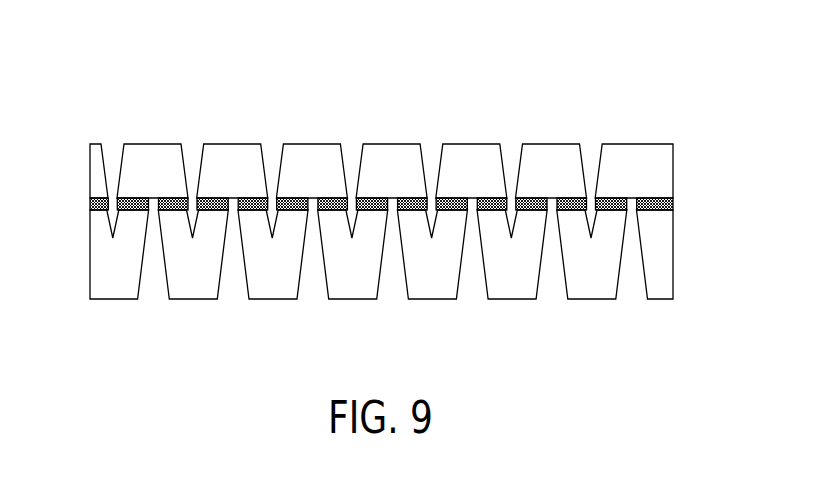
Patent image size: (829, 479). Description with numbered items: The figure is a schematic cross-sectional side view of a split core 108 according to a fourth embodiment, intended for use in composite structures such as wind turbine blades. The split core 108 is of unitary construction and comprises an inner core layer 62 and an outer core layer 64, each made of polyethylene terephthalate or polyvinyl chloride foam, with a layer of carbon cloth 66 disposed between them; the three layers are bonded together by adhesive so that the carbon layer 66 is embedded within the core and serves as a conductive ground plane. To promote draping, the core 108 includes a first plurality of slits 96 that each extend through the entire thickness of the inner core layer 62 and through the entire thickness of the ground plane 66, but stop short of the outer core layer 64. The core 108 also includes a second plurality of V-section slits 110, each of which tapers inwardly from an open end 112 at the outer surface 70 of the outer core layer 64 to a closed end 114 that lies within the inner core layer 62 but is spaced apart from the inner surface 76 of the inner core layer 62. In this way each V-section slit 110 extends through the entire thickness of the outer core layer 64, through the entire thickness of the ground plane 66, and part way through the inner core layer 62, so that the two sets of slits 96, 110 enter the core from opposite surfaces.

The inner core layer 62 is at (663, 255).
The outer core layer 64 is at (663, 172).
The layer of carbon cloth 66 is at (679, 204).
The outer surface 70 is at (314, 142).
The inner surface 76 is at (438, 303).
The first plurality of slits 96 is at (154, 286).
The split core 108 is at (631, 126).
The second plurality of V-section slits 110 is at (112, 146).
The open end 112 is at (193, 153).
The closed end 114 is at (193, 238).